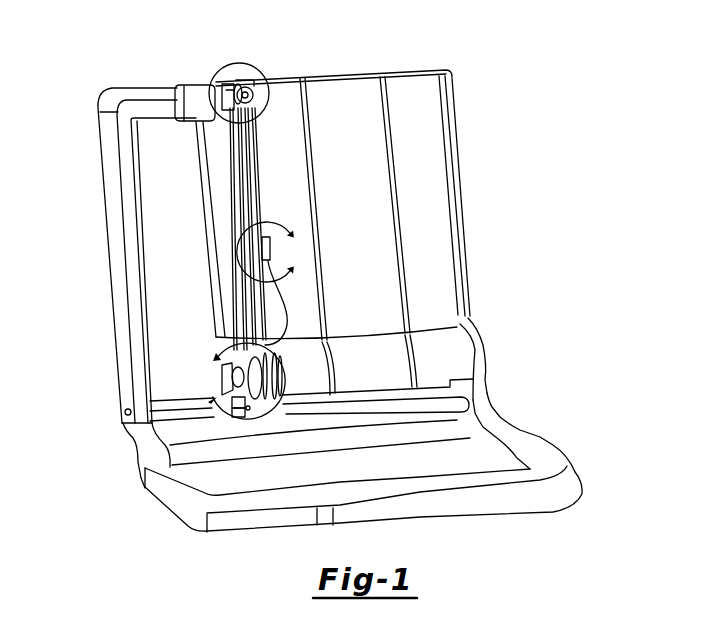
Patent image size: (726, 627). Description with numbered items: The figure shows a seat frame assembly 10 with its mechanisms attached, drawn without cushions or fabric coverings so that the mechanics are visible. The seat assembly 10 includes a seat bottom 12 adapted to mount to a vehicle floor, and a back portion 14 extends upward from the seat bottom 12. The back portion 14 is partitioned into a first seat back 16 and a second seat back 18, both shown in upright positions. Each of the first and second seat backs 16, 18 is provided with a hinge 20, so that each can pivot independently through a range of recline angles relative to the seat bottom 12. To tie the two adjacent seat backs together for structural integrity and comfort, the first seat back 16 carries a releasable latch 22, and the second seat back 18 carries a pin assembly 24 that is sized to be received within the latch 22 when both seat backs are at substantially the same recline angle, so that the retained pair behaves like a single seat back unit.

The seat frame assembly 10 is at (494, 83).
The seat bottom 12 is at (547, 441).
The back portion 14 is at (433, 186).
The first seat back 16 is at (143, 88).
The second seat back 18 is at (353, 70).
The hinge 20 is at (488, 353).
The releasable latch 22 is at (190, 85).
The pin assembly 24 is at (223, 68).